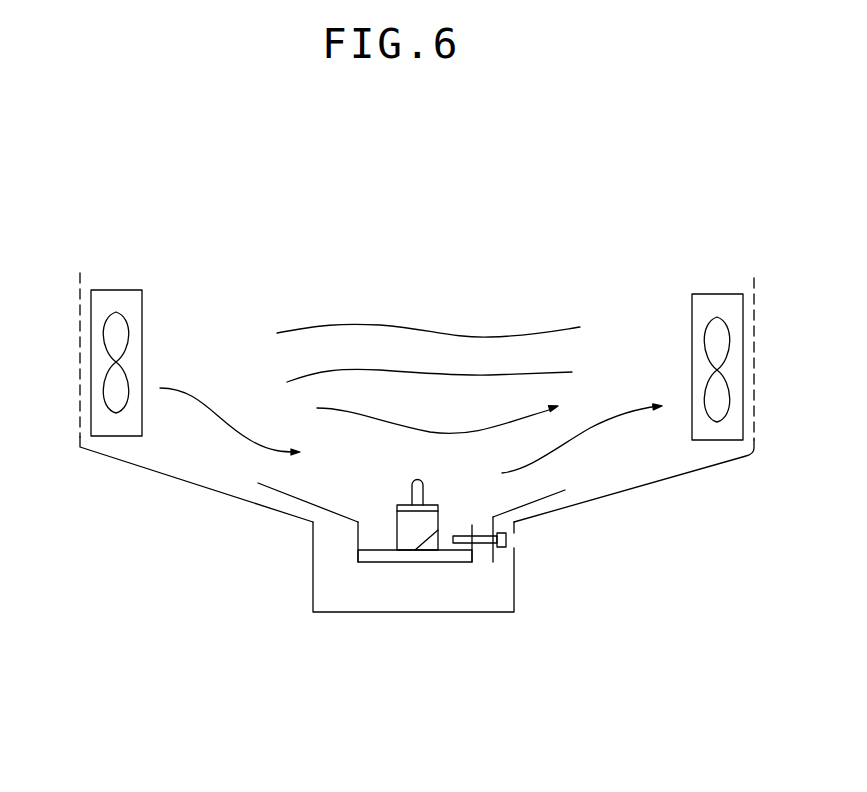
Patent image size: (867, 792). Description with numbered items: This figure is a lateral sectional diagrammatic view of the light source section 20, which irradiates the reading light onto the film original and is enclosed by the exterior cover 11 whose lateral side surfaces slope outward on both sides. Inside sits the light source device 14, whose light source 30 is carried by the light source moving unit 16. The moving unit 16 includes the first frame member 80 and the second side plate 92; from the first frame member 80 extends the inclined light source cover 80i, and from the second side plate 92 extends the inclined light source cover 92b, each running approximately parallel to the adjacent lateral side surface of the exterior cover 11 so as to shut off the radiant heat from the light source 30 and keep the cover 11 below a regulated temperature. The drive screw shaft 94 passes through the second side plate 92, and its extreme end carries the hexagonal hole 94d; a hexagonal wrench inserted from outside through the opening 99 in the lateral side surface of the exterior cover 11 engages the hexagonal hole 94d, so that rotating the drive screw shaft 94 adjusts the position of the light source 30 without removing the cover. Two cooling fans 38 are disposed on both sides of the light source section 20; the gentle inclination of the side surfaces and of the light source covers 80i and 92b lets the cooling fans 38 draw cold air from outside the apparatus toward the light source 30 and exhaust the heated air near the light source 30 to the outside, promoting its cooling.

The exterior cover 11 is at (172, 478).
The light source device 14 is at (385, 487).
The light source moving unit 16 is at (405, 578).
The light source section 20 is at (404, 296).
The light source 30 is at (418, 485).
The cooling fan 38 is at (108, 298).
The first frame member 80 is at (362, 562).
The light source cover 80i is at (288, 496).
The second side plate 92 is at (495, 560).
The light source cover 92b is at (558, 495).
The drive screw shaft 94 is at (480, 532).
The hexagonal hole 94d is at (500, 547).
The opening 99 is at (514, 541).